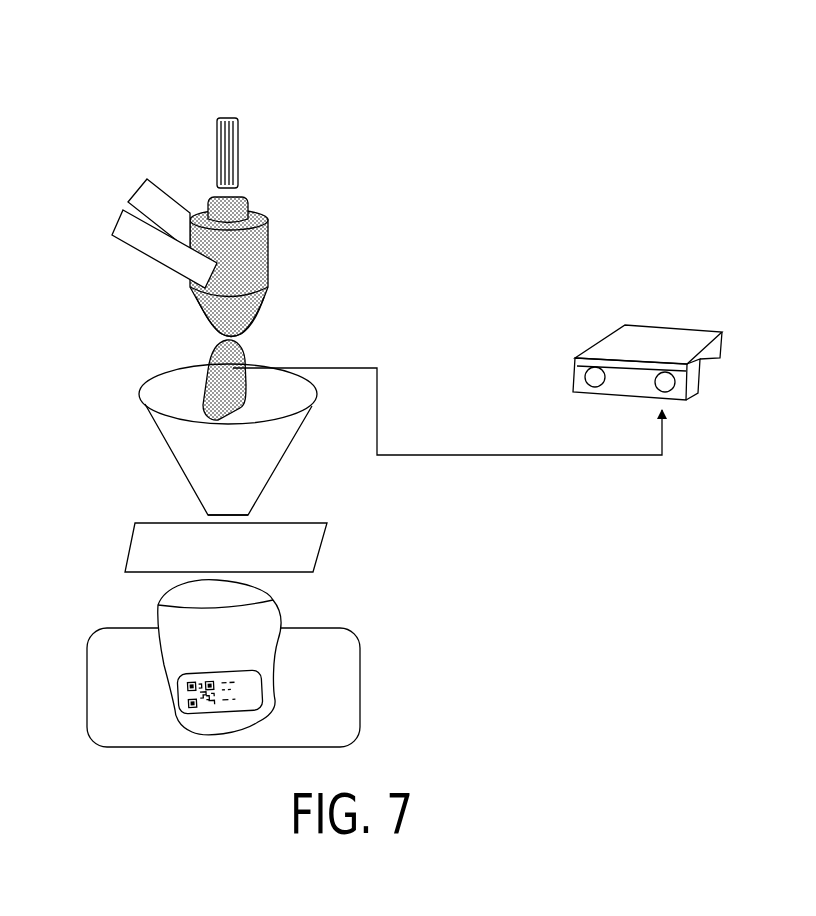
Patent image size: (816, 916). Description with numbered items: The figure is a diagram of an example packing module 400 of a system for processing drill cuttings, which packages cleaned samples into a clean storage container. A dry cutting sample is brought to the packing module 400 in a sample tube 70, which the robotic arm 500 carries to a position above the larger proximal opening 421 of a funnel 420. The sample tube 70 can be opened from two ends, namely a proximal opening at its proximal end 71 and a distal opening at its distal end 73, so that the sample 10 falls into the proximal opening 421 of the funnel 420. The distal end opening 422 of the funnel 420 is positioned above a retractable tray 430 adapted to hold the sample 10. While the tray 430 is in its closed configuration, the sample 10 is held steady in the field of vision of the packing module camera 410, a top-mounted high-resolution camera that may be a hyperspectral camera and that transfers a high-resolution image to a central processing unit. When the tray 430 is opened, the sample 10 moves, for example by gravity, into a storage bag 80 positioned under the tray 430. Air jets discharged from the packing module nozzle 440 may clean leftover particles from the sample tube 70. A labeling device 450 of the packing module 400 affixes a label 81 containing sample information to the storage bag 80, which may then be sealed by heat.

The packing module 400 is at (498, 97).
The packing module nozzle 440 is at (240, 150).
The proximal end 71 is at (233, 207).
The sample tube 70 is at (264, 261).
The distal end 73 is at (235, 308).
The robotic arm 500 is at (130, 230).
The sample 10 is at (190, 383).
The proximal opening 421 is at (160, 395).
The funnel 420 is at (192, 452).
The distal end opening 422 is at (217, 508).
The retractable tray 430 is at (153, 552).
The storage bag 80 is at (287, 671).
The label 81 is at (240, 700).
The labeling device 450 is at (133, 727).
The packing module camera 410 is at (660, 325).